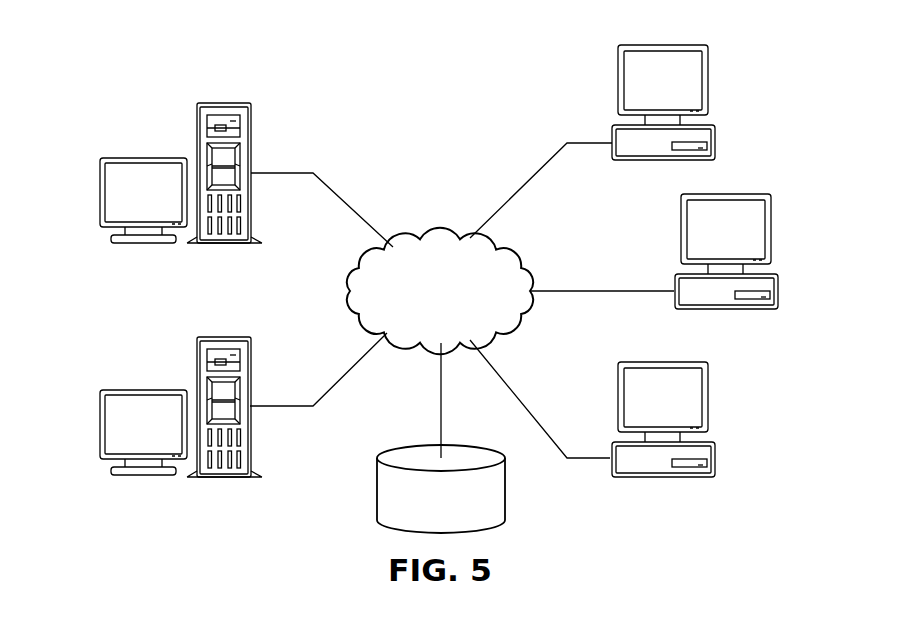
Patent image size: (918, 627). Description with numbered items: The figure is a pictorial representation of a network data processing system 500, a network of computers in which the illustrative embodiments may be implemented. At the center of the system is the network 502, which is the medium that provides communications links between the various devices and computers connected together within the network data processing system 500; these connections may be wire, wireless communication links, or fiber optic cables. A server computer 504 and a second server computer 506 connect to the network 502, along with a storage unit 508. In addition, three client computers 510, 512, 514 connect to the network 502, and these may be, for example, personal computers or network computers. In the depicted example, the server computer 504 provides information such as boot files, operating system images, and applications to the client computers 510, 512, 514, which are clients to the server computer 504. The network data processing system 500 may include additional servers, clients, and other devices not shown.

The network data processing system 500 is at (323, 95).
The network 502 is at (435, 233).
The server computer 504 is at (100, 192).
The server computer 506 is at (100, 425).
The storage unit 508 is at (377, 490).
The client computer 510 is at (715, 133).
The client computer 512 is at (780, 300).
The client computer 514 is at (715, 470).